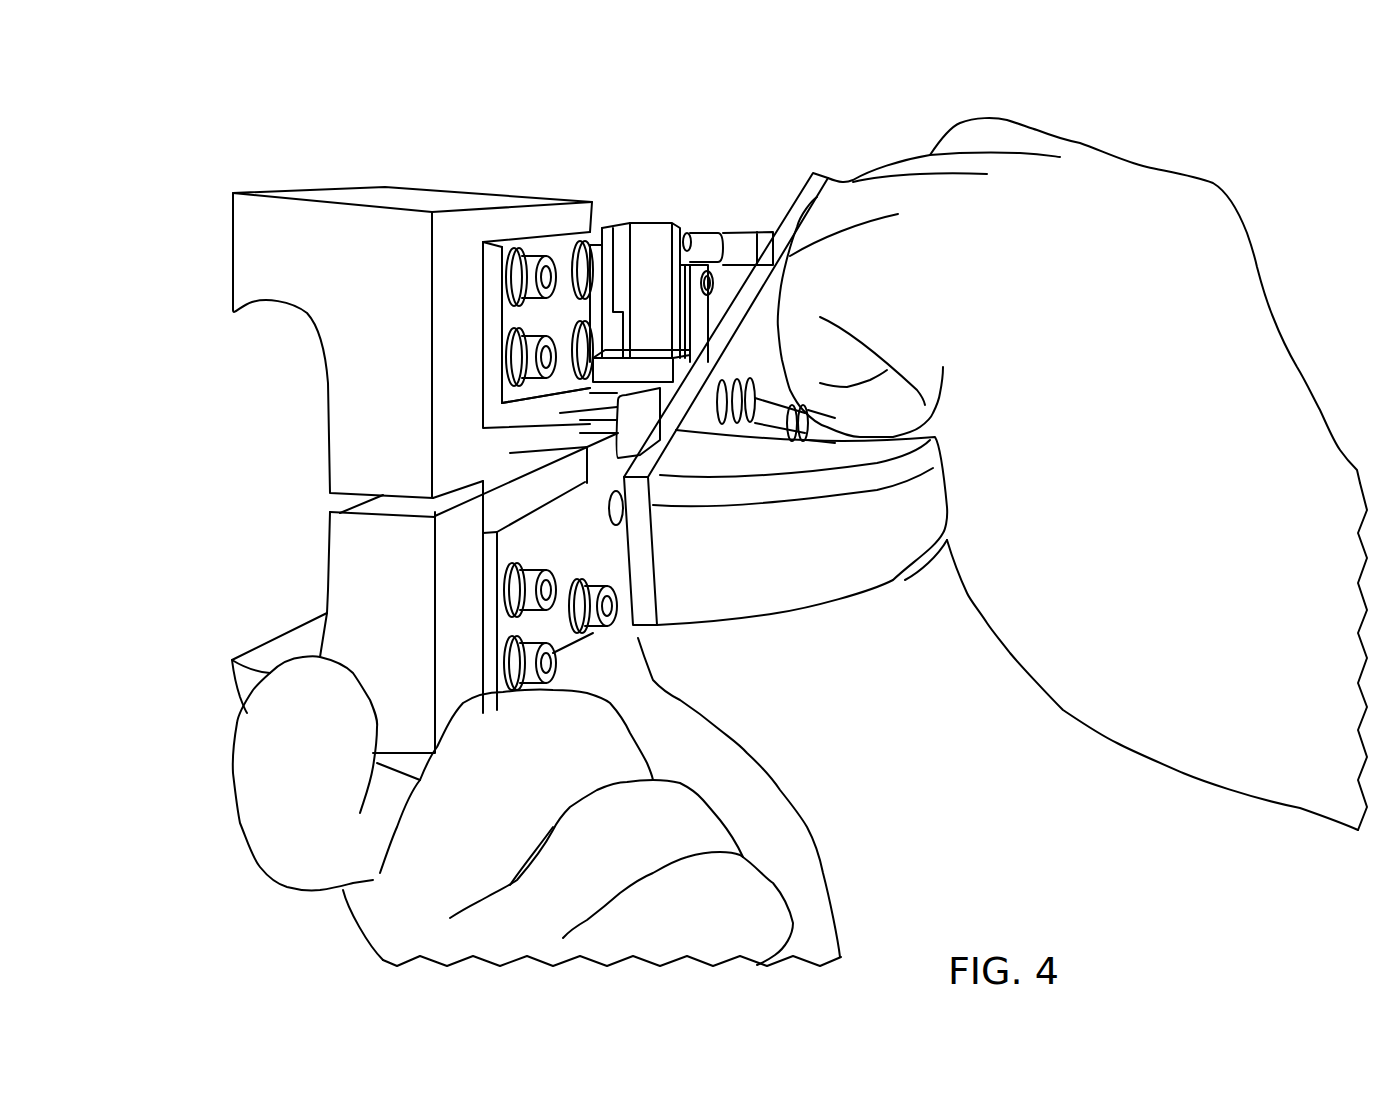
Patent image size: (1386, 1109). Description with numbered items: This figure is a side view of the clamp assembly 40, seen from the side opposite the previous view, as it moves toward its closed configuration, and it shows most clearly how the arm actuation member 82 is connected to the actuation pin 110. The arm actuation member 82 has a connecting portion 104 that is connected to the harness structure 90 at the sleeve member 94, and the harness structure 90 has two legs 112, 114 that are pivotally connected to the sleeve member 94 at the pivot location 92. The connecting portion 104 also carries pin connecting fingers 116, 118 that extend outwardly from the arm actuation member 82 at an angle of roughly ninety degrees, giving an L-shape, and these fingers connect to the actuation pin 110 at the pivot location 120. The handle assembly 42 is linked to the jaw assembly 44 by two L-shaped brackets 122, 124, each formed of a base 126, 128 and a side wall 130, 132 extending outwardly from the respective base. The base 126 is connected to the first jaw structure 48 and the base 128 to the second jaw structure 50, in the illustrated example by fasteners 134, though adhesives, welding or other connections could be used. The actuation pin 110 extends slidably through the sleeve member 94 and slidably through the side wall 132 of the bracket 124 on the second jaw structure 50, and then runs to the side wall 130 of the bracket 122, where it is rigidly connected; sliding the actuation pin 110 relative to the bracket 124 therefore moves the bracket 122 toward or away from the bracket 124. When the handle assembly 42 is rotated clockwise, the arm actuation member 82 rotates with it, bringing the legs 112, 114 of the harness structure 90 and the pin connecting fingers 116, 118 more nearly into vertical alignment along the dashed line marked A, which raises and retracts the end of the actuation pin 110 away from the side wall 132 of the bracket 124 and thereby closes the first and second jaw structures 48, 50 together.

The clamp assembly 40 is at (485, 423).
The handle assembly 42 is at (832, 636).
The jaw assembly 44 is at (364, 483).
The first jaw structure 48 is at (285, 646).
The second jaw structure 50 is at (379, 342).
The arm actuation member 82 is at (748, 223).
The harness structure 90 is at (571, 303).
The pivot location 92 is at (713, 284).
The sleeve member 94 is at (548, 392).
The connecting portion 104 is at (690, 485).
The actuation pin 110 is at (648, 224).
The leg 112 is at (594, 300).
The leg 114 is at (705, 340).
The pin connecting finger 116 is at (618, 226).
The pin connecting finger 118 is at (677, 273).
The pivot location 120 is at (688, 232).
The bracket 122 is at (538, 597).
The bracket 124 is at (480, 328).
The base 126 is at (543, 641).
The base 128 is at (512, 318).
The side wall 130 is at (563, 547).
The side wall 132 is at (550, 428).
The fasteners 134 is at (531, 270).